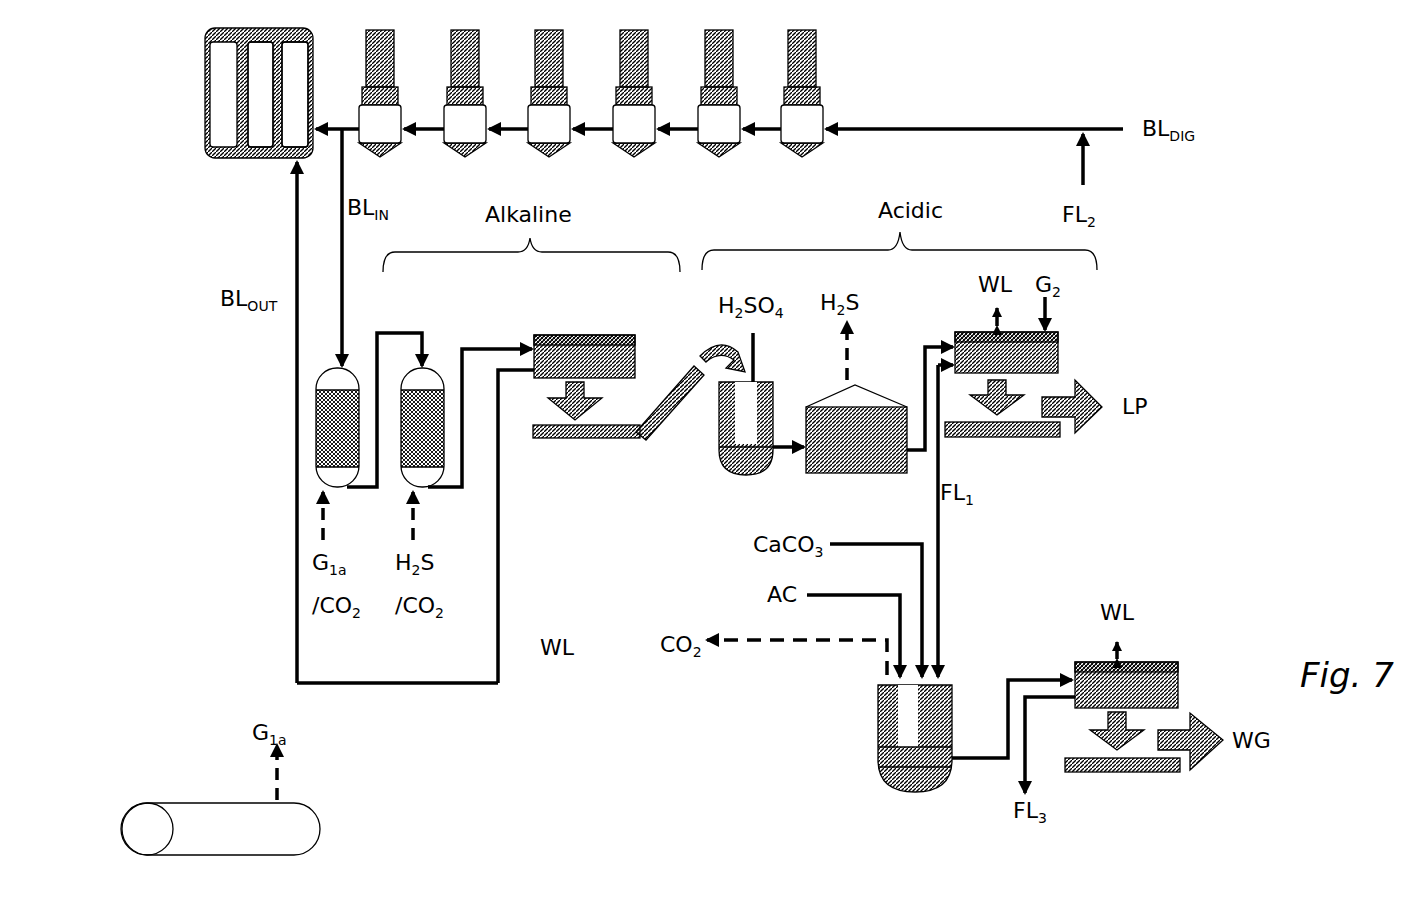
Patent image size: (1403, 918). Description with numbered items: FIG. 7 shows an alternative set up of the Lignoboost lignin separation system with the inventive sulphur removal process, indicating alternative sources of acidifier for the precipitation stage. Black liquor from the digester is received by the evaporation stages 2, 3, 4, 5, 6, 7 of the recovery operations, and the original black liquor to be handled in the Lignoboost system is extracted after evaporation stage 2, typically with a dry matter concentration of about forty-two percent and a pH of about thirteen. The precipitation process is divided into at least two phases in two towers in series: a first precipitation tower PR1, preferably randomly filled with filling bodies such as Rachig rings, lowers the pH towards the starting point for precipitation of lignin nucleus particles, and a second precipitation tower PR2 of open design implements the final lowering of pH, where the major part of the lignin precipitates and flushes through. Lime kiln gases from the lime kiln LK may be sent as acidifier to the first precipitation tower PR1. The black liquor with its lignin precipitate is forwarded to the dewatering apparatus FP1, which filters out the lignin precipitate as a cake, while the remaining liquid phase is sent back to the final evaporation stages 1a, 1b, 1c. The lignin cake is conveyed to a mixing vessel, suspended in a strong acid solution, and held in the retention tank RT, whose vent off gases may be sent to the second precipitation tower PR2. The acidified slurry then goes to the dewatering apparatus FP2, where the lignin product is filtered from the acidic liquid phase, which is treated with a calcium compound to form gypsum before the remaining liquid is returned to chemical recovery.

The final evaporation stage 1a is at (259, 93).
The final evaporation stage 1b is at (260, 94).
The final evaporation stage 1c is at (295, 94).
The evaporation stage 2 is at (380, 93).
The evaporation stage 3 is at (465, 93).
The evaporation stage 4 is at (549, 93).
The evaporation stage 5 is at (634, 93).
The evaporation stage 6 is at (719, 93).
The evaporation stage 7 is at (802, 93).
The first precipitation tower PR1 is at (337, 427).
The second precipitation tower PR2 is at (422, 427).
The dewatering apparatus FP1 is at (639, 387).
The dewatering apparatus FP2 is at (1023, 384).
The retention tank RT is at (856, 429).
The lime kiln LK is at (220, 829).